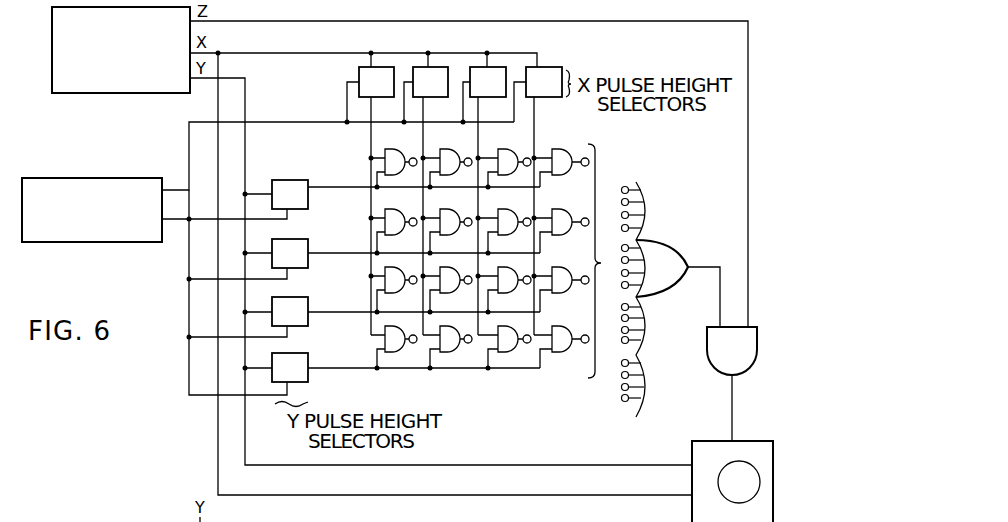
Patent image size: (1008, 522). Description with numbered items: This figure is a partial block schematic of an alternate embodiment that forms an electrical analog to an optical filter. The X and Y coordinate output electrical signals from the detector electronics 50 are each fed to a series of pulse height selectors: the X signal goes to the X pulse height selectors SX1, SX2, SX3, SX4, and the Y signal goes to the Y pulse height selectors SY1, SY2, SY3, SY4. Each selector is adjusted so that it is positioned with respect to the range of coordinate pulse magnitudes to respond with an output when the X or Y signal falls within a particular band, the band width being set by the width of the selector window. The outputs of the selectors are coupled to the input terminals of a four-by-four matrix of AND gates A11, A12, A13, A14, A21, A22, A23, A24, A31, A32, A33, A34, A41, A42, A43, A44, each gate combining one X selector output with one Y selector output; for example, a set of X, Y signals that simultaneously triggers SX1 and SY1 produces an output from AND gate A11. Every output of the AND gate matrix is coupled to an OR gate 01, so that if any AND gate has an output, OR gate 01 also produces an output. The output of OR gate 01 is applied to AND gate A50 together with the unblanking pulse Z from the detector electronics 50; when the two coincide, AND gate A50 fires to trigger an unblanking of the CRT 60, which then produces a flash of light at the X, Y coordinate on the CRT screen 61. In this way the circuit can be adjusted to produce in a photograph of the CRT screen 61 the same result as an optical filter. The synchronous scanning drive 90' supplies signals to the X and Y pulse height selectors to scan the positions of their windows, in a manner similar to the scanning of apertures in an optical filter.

The detector electronics 50 is at (100, 93).
The synchronous scanning drive 90' is at (92, 222).
The X pulse height selector SX1 is at (376, 82).
The X pulse height selector SX2 is at (430, 82).
The X pulse height selector SX3 is at (488, 82).
The X pulse height selector SX4 is at (544, 82).
The Y pulse height selector SY1 is at (290, 367).
The Y pulse height selector SY2 is at (290, 311).
The Y pulse height selector SY3 is at (290, 253).
The Y pulse height selector SY4 is at (290, 194).
The AND gate A11 is at (398, 342).
The AND gate A12 is at (398, 283).
The AND gate A13 is at (394, 220).
The AND gate A14 is at (394, 158).
The AND gate A21 is at (453, 342).
The AND gate A22 is at (453, 283).
The AND gate A23 is at (449, 220).
The AND gate A24 is at (449, 158).
The AND gate A31 is at (511, 342).
The AND gate A32 is at (511, 283).
The AND gate A33 is at (507, 220).
The AND gate A34 is at (507, 158).
The AND gate A41 is at (565, 342).
The AND gate A42 is at (565, 283).
The AND gate A43 is at (561, 220).
The AND gate A44 is at (561, 158).
The OR gate 01 is at (659, 253).
The AND gate A50 is at (757, 356).
The CRT 60 is at (768, 512).
The CRT screen 61 is at (755, 480).